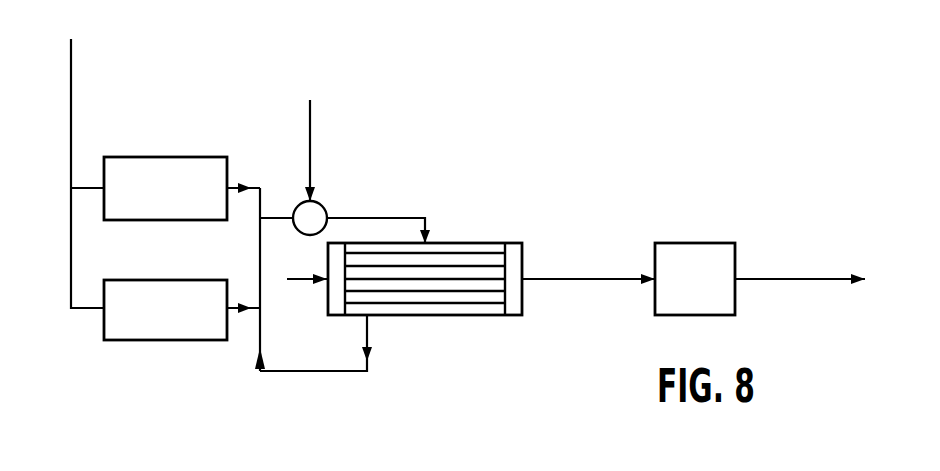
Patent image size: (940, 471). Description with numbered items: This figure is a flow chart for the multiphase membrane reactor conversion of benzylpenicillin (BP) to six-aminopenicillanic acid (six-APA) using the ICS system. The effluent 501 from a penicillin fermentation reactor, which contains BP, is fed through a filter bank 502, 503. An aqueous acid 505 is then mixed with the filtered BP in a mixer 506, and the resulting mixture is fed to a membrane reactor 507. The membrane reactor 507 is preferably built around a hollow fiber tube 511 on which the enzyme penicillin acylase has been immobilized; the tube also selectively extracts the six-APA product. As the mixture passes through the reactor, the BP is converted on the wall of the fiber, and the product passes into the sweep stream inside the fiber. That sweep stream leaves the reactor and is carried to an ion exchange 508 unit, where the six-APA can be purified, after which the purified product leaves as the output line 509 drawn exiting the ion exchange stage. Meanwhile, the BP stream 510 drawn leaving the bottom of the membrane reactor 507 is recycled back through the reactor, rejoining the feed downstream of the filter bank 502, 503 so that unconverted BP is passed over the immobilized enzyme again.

The effluent 501 is at (71, 79).
The filter bank 502 is at (187, 201).
The filter bank 503 is at (187, 321).
The aqueous acid 505 is at (310, 132).
The mixer 506 is at (323, 206).
The membrane reactor 507 is at (441, 280).
The ion exchange 508 is at (697, 243).
The outlet line 509 is at (793, 281).
The BP stream 510 is at (315, 372).
The hollow fiber tube 511 is at (480, 253).